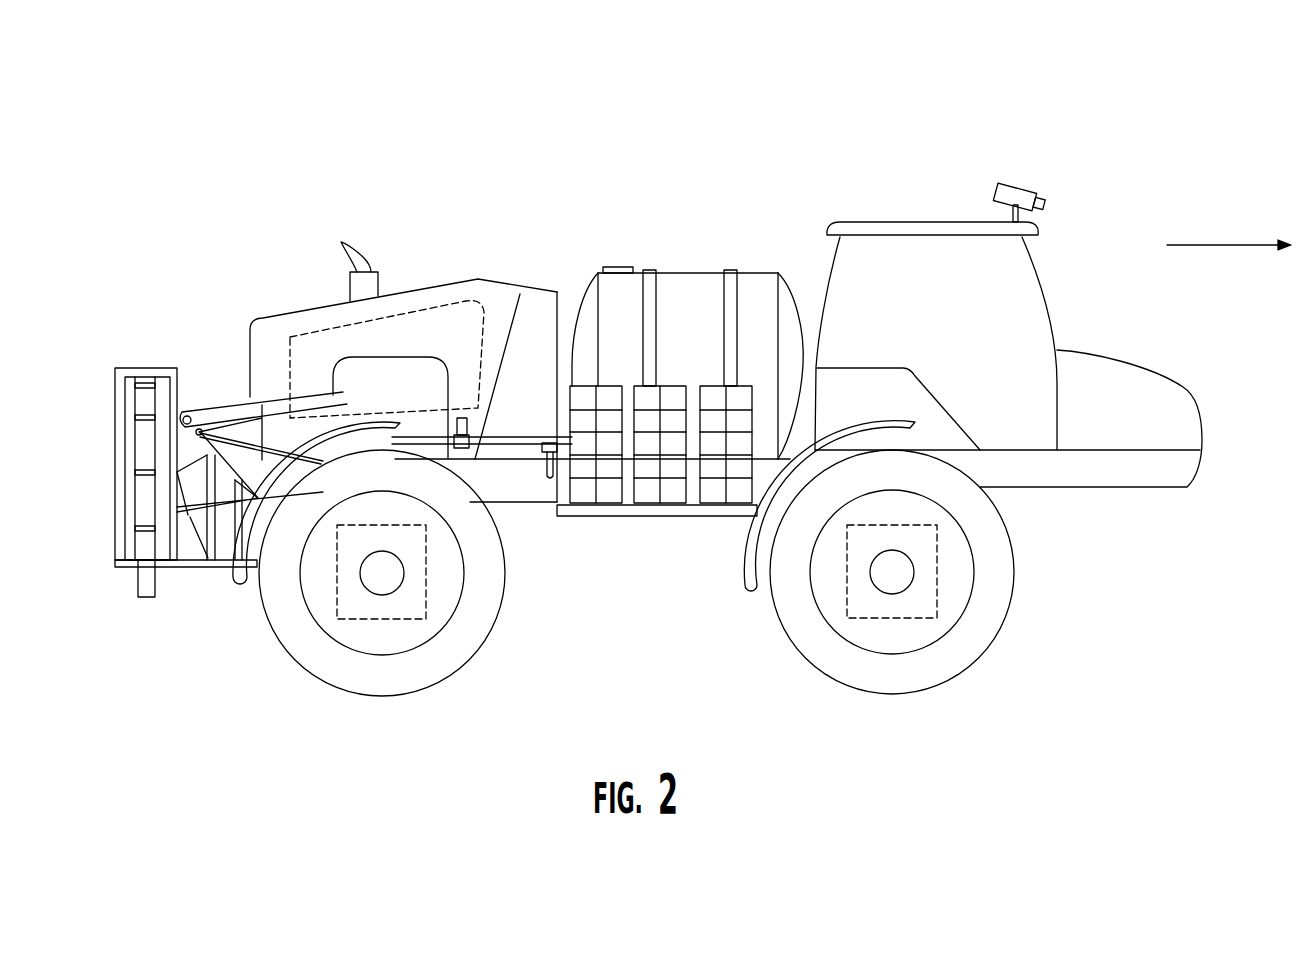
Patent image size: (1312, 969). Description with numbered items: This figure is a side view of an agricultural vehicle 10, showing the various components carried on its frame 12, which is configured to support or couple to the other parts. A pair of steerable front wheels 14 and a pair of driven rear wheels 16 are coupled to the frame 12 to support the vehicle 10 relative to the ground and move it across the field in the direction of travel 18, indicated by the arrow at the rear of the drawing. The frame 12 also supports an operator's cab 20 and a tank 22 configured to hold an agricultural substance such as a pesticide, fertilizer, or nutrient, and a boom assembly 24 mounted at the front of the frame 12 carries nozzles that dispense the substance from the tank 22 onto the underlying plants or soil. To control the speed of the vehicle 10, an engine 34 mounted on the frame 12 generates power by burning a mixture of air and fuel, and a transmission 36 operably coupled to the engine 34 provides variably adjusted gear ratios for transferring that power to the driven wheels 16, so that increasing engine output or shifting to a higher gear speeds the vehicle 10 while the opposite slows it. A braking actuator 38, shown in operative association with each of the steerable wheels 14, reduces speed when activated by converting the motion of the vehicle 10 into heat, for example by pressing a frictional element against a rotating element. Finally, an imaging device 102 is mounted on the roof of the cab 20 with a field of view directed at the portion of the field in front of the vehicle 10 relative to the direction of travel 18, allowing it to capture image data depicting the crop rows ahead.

The agricultural vehicle 10 is at (158, 184).
The frame 12 is at (1100, 488).
The steerable front wheels 14 is at (990, 648).
The driven rear wheels 16 is at (295, 647).
The direction of travel 18 is at (1230, 245).
The operator's cab 20 is at (908, 219).
The tank 22 is at (682, 273).
The boom assembly 24 is at (144, 342).
The engine 34 is at (432, 302).
The transmission 36 is at (402, 618).
The braking actuator 38 is at (908, 617).
The imaging device 102 is at (1018, 185).